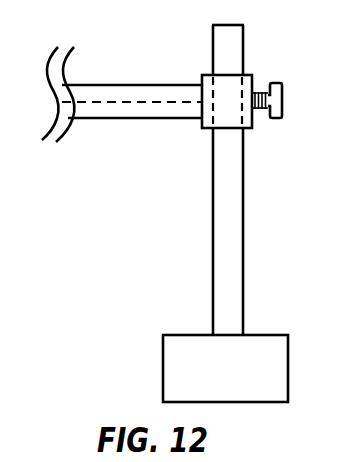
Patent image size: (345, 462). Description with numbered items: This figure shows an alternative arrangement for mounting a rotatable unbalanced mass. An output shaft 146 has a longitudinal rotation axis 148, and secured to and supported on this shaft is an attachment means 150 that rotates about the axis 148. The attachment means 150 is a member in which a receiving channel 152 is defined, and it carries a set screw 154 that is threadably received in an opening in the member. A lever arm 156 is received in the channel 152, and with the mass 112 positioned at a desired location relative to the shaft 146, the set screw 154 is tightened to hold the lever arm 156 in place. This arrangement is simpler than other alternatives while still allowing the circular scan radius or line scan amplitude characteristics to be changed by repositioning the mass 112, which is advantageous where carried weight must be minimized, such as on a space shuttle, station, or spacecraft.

The mass 112 is at (163, 367).
The output shaft 146 is at (133, 85).
The longitudinal rotation axis 148 is at (123, 104).
The attachment means 150 is at (249, 75).
The receiving channel 152 is at (212, 110).
The set screw 154 is at (277, 123).
The lever arm 156 is at (244, 245).